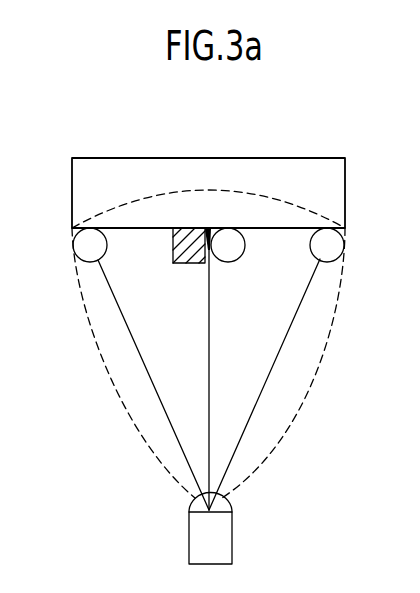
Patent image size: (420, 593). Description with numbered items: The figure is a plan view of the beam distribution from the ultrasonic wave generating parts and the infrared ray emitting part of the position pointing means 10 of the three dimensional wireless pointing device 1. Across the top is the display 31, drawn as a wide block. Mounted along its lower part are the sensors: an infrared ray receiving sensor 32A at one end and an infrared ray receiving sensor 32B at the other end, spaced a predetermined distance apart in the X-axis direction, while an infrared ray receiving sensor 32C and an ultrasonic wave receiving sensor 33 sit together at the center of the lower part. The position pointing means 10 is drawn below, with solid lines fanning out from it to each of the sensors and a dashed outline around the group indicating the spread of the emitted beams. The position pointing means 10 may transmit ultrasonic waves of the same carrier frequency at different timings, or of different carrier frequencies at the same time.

The bar code reading device 1 is at (415, 305).
The position pointing means 10 is at (216, 540).
The display 31 is at (325, 192).
The infrared ray receiving sensor 32A is at (88, 250).
The infrared ray receiving sensor 32B is at (323, 246).
The infrared ray receiving sensor 32C is at (237, 262).
The ultrasonic wave receiving sensor 33 is at (177, 263).